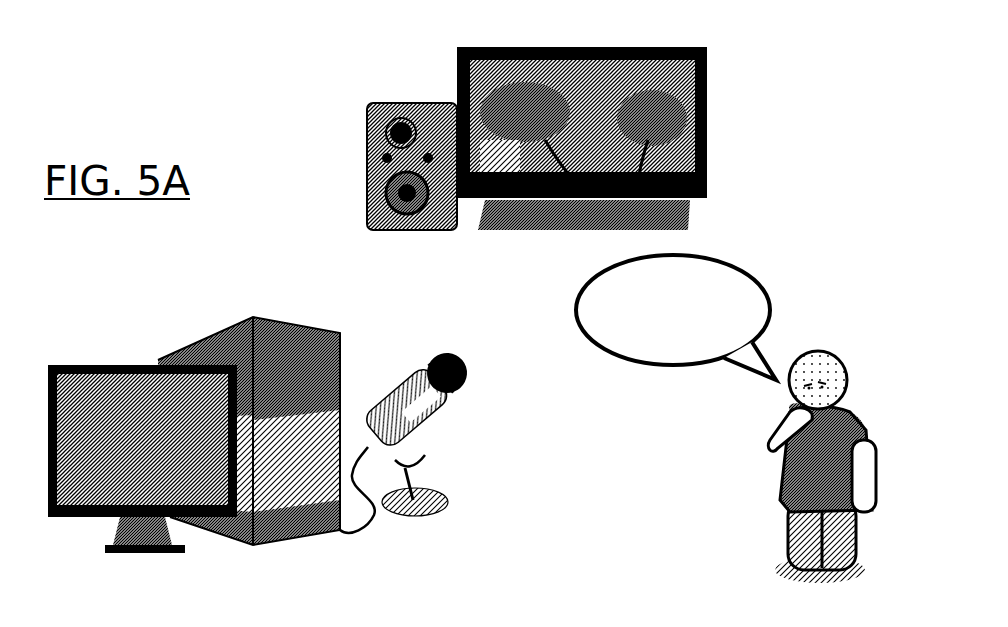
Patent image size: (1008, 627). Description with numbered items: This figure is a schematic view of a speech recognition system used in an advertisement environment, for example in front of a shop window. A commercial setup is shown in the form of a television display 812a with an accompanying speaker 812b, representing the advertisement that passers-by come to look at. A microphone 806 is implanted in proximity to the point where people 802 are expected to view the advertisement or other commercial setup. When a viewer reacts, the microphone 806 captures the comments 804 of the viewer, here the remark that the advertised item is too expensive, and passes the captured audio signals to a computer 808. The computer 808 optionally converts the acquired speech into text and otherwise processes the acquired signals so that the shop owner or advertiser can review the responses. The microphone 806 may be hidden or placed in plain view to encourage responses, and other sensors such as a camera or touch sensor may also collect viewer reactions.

The people 802 is at (786, 537).
The comments 804 is at (745, 264).
The microphone 806 is at (452, 400).
The computer 808 is at (183, 352).
The television display 812a is at (707, 184).
The speaker 812b is at (367, 122).